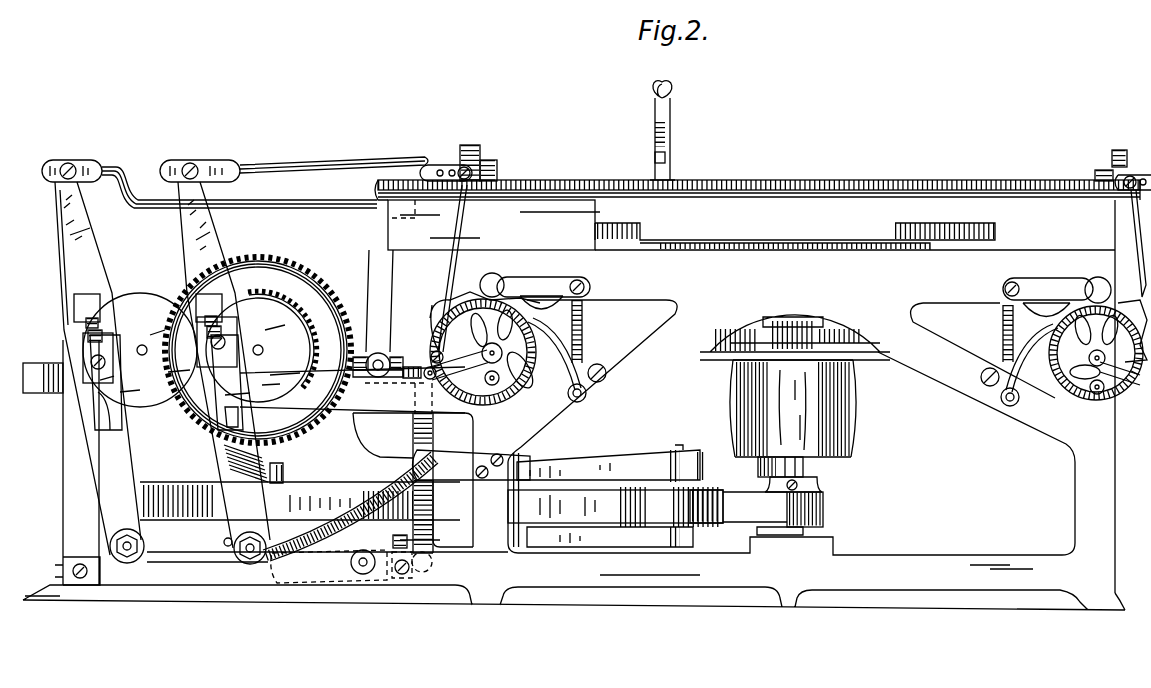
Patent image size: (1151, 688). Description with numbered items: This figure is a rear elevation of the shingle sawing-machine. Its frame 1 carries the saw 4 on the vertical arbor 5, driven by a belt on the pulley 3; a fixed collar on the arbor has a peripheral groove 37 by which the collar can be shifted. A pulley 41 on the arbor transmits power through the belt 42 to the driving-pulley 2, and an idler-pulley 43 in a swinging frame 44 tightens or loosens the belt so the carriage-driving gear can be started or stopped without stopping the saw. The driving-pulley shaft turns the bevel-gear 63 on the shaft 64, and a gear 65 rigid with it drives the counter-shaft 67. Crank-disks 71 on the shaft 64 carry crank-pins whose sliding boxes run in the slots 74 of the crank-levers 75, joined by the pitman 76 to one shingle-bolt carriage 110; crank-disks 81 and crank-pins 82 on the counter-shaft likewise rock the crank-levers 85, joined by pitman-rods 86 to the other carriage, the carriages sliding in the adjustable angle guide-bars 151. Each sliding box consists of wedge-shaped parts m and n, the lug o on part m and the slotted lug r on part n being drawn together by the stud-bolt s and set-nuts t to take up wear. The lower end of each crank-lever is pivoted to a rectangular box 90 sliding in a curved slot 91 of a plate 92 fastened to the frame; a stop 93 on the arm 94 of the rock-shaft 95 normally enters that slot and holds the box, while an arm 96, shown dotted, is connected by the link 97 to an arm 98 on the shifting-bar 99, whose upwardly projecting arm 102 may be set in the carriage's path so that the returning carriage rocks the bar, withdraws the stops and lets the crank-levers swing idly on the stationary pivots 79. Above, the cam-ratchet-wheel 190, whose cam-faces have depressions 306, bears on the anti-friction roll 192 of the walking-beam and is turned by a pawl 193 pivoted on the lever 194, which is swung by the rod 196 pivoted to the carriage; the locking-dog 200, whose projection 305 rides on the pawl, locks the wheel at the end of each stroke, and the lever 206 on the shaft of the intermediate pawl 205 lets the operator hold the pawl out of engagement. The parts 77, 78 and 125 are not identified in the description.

The frame 1 is at (700, 572).
The driving-pulley 2 is at (302, 443).
The pulley 3 is at (793, 408).
The saw 4 is at (795, 236).
The arbor 5 is at (789, 467).
The groove 37 is at (783, 350).
The pulley 41 is at (820, 485).
The belt 42 is at (615, 518).
The idler-pulley 43 is at (670, 502).
The swinging frame 44 is at (611, 462).
The bevel-gear 63 is at (258, 348).
The shaft 64 is at (258, 350).
The gear 65 is at (289, 339).
The counter-shaft 67 is at (140, 350).
The crank-disks 71 is at (261, 320).
The slots 74 is at (246, 456).
The crank-levers 75 is at (224, 373).
The pitman 76 is at (334, 159).
The rocker arm 77 is at (448, 165).
The slot 78 is at (227, 382).
The stationary pivots 79 is at (190, 163).
The crank-disks 81 is at (160, 321).
The crank-pins 82 is at (106, 382).
The crank-levers 85 is at (93, 361).
The pitman-rods 86 is at (239, 187).
The rectangular box 90 is at (263, 545).
The curved slot 91 is at (472, 465).
The plate 92 is at (350, 506).
The stop 93 is at (283, 559).
The arm 94 is at (300, 560).
The rock-shaft 95 is at (370, 575).
The arm 96 is at (385, 552).
The link 97 is at (423, 483).
The arm 98 is at (398, 356).
The shifting-bar 99 is at (380, 352).
The upwardly-projecting arm 102 is at (381, 301).
The carriages 110 is at (478, 145).
The rod 125 is at (680, 130).
The guide-bars 151 is at (1060, 214).
The ratchet-wheel 190 is at (488, 392).
The anti-friction roll 192 is at (497, 386).
The pawl 193 is at (496, 350).
The lever 194 is at (436, 378).
The link or rod 196 is at (494, 225).
The locking-dog 200 is at (795, 288).
The intermediate pawl 205 is at (568, 375).
The lever 206 is at (580, 345).
The projection 305 is at (500, 281).
The depressions 306 is at (484, 352).
The set-nuts t is at (76, 326).
The stud-bolt s is at (76, 343).
The wedge-shaped part n is at (82, 352).
The lug r is at (105, 326).
The lug o is at (187, 329).
The wedge-shaped part m is at (122, 364).